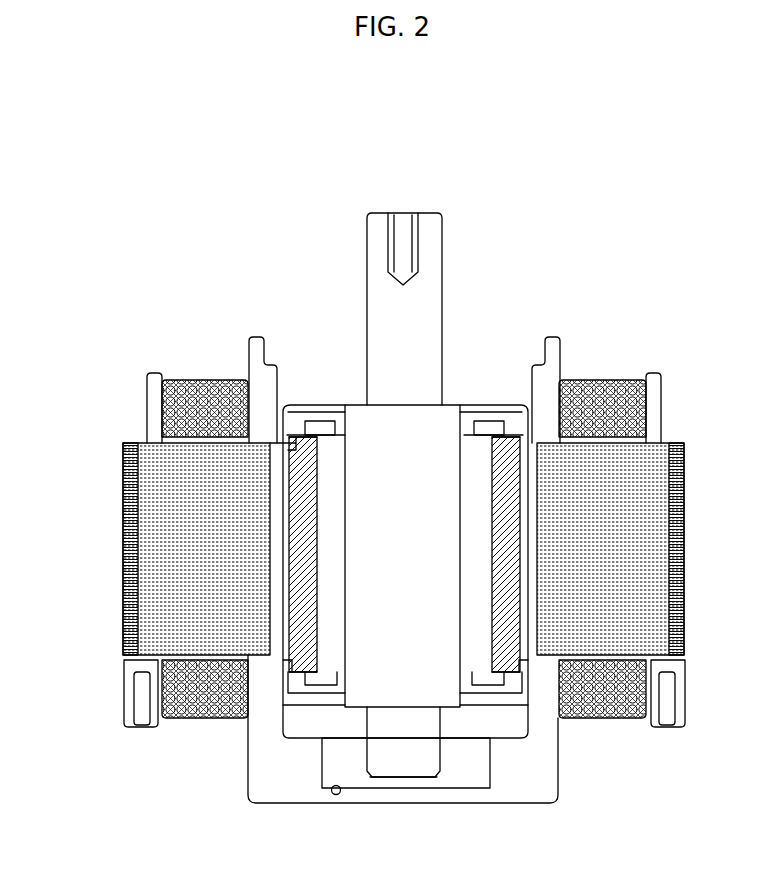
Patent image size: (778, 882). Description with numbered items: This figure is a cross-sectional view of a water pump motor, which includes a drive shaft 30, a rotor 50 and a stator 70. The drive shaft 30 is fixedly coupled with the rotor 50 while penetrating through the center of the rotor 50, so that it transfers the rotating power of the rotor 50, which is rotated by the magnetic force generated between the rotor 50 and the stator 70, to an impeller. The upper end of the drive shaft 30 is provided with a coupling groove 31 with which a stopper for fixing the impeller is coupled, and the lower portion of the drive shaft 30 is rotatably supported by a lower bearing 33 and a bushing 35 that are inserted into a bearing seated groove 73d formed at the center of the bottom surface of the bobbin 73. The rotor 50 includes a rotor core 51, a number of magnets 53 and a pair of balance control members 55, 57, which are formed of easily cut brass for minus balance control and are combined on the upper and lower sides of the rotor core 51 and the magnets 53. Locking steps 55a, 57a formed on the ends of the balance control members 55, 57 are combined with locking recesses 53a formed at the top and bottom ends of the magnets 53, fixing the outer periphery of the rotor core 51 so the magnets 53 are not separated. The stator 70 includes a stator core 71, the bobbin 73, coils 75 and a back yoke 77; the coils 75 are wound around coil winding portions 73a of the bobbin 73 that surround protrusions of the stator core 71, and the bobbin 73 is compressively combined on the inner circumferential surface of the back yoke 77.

The drive shaft 30 is at (422, 312).
The coupling groove 31 is at (400, 243).
The lower bearing 33 is at (295, 768).
The bushing 35 is at (385, 788).
The rotor 50 is at (322, 395).
The rotor core 51 is at (470, 548).
The magnets 53 is at (502, 502).
The locking recesses 53a is at (287, 420).
The balance control member 55 is at (502, 415).
The locking step 55a is at (290, 443).
The balance control member 57 is at (513, 682).
The locking step 57a is at (290, 664).
The stator 70 is at (355, 492).
The stator core 71 is at (150, 582).
The bobbin 73 is at (150, 402).
The coil winding portions 73a is at (298, 714).
The bearing seated groove 73d is at (337, 796).
The coils 75 is at (607, 393).
The back yoke 77 is at (128, 512).